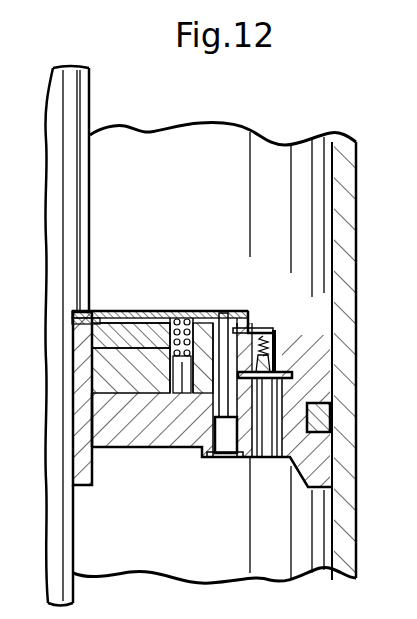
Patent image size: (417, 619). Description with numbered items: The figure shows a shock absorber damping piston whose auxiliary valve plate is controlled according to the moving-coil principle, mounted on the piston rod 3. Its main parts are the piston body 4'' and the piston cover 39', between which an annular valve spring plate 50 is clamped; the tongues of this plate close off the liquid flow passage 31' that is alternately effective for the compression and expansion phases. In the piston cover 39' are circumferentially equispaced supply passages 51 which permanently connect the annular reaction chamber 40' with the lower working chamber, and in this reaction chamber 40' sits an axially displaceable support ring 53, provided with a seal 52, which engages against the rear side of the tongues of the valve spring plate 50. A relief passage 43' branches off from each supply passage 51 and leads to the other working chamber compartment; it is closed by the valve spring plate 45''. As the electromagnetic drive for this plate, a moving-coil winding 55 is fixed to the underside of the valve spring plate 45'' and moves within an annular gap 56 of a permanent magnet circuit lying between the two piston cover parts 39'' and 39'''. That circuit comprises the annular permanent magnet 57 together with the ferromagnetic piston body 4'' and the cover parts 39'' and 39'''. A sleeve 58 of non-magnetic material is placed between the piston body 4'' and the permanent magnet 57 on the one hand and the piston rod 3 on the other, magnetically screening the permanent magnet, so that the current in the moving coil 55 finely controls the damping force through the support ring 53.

The piston rod 3 is at (50, 518).
The piston body 4'' is at (214, 353).
The liquid flow passage 31' is at (275, 446).
The piston cover 39' is at (221, 332).
The piston cover part 39'' is at (160, 297).
The piston cover part 39''' is at (275, 314).
The reaction chamber 40' is at (293, 341).
The relief passage 43' is at (257, 303).
The valve spring plate 45'' is at (195, 331).
The annular valve spring plate 50 is at (297, 378).
The supply passage 51 is at (223, 413).
The seal 52 is at (272, 355).
The support ring 53 is at (272, 370).
The moving-coil winding 55 is at (172, 323).
The annular gap 56 is at (178, 367).
The annular permanent magnet 57 is at (100, 362).
The sleeve 58 is at (80, 385).